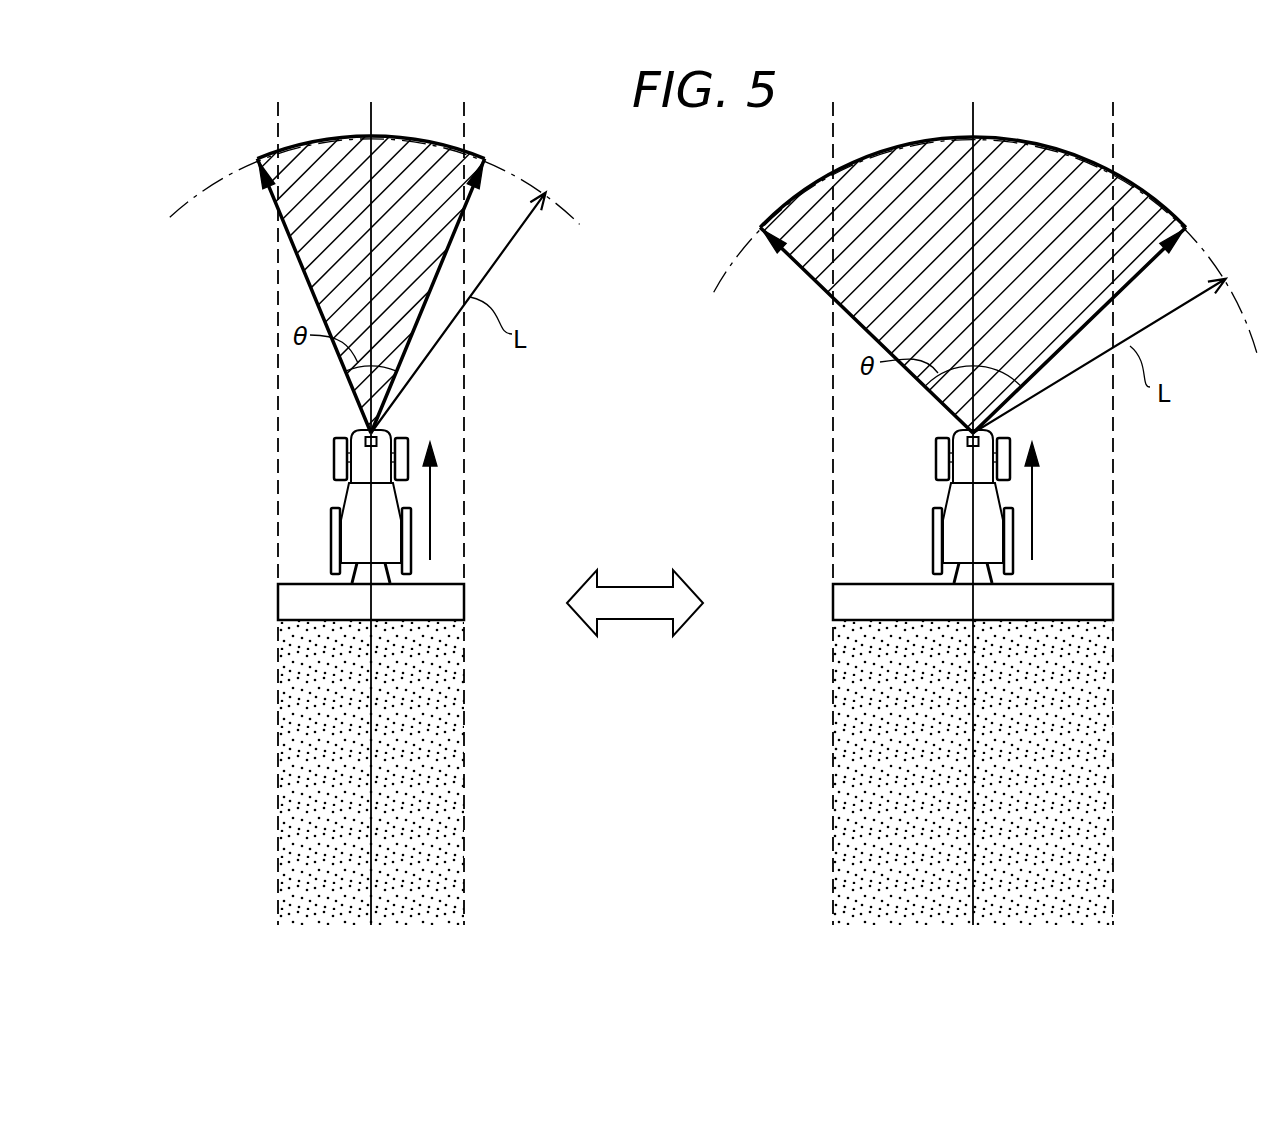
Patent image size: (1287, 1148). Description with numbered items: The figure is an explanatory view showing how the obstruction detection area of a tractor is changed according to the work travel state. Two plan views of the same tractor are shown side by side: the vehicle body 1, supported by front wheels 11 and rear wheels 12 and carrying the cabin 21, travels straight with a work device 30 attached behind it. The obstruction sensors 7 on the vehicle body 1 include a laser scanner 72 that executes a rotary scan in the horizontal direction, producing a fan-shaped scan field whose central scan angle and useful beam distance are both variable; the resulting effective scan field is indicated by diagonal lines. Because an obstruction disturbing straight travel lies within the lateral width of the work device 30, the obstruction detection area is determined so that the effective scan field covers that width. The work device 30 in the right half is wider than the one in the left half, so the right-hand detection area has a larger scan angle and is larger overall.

The vehicle body 1 is at (702, 473).
The obstruction sensors 7 is at (770, 437).
The laser scanner 72 is at (378, 436).
The front wheels 11 is at (334, 455).
The rear wheels 12 is at (331, 543).
The cabin 21 is at (393, 555).
The work device 30 is at (285, 598).